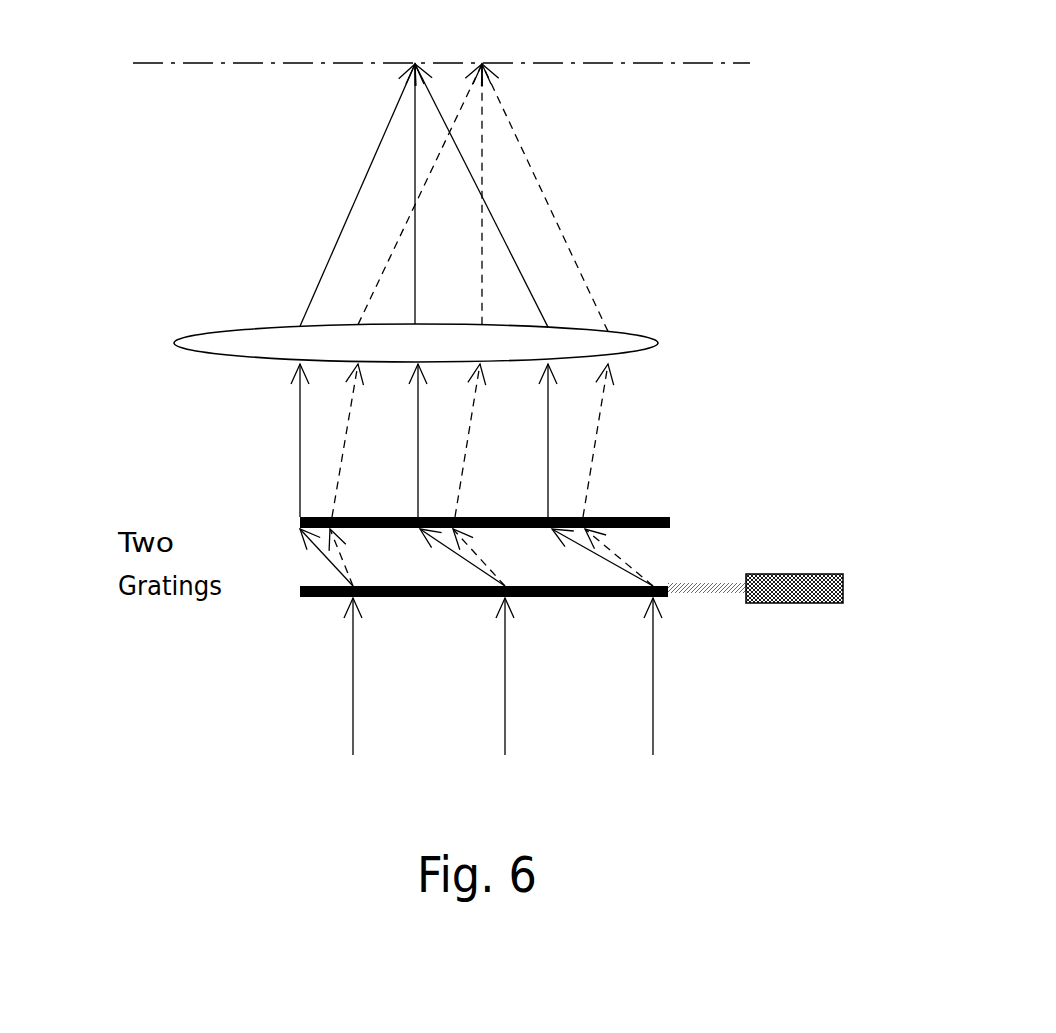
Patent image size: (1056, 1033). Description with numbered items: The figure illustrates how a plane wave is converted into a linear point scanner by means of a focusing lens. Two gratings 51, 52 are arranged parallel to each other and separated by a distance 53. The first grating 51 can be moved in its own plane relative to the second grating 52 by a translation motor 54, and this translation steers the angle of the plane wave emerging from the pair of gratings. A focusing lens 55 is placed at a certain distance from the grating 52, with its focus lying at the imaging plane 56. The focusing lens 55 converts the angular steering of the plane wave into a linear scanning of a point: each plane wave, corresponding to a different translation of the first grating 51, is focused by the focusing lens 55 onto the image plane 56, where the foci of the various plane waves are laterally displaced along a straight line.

The grating 51 is at (460, 599).
The grating 52 is at (461, 531).
The distance 53 is at (707, 567).
The translation motor 54 is at (891, 589).
The focusing lens 55 is at (540, 343).
The imaging plane 56 is at (555, 61).